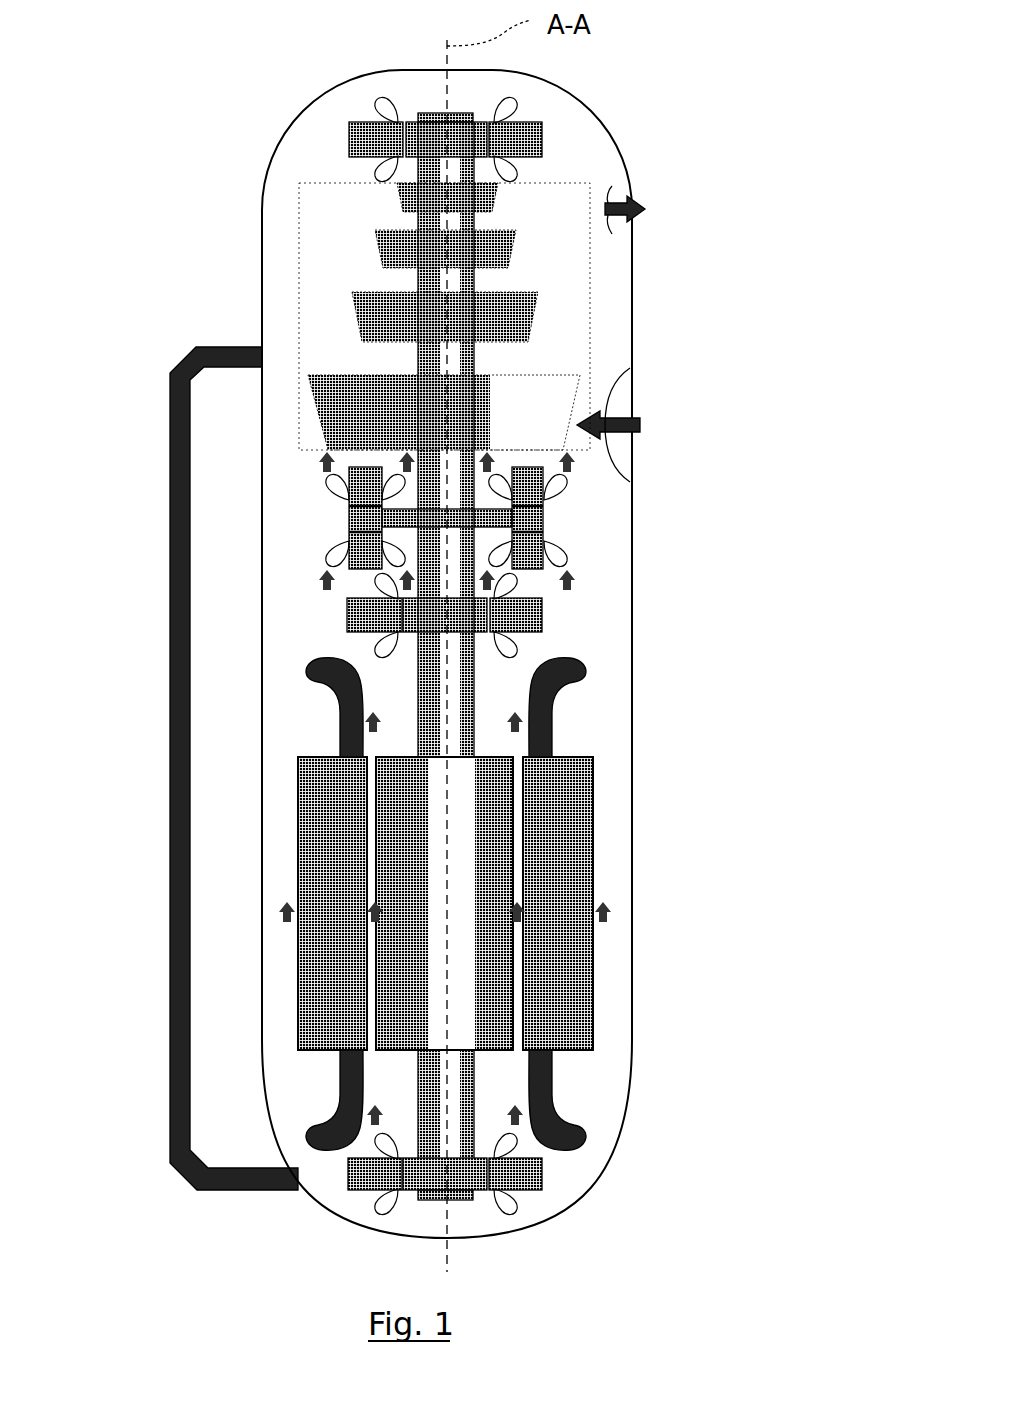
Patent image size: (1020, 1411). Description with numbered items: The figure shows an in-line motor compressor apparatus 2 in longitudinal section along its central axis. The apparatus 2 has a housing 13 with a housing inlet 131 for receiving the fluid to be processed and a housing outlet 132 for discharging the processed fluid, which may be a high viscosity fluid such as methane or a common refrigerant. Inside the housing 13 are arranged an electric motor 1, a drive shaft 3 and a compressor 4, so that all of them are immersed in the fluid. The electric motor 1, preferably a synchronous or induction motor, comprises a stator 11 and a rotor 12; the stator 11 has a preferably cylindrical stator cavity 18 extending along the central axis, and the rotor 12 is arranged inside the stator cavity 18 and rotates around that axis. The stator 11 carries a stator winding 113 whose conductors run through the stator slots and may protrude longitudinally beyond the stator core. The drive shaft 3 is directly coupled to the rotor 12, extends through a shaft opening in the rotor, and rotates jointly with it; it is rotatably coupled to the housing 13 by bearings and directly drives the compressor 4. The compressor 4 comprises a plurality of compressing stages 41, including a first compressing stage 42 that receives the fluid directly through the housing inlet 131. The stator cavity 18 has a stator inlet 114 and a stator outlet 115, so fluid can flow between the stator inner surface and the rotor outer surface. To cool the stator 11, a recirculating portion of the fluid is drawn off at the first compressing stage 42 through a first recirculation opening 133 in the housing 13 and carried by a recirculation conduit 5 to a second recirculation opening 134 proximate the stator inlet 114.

The electric motor 1 is at (478, 950).
The in-line motor compressor apparatus 2 is at (677, 1166).
The drive shaft 3 is at (456, 666).
The compressor 4 is at (459, 316).
The recirculation conduit 5 is at (174, 700).
The stator 11 is at (573, 983).
The rotor 12 is at (410, 877).
The housing 13 is at (290, 137).
The stator cavity 18 is at (392, 1096).
The compressing stages 41 is at (400, 198).
The first compressing stage 42 is at (310, 417).
The stator winding 113 is at (326, 671).
The stator inlet 114 is at (520, 1060).
The stator outlet 115 is at (520, 753).
The housing inlet 131 is at (628, 435).
The housing outlet 132 is at (628, 186).
The first recirculation opening 133 is at (260, 345).
The second recirculation opening 134 is at (294, 1190).